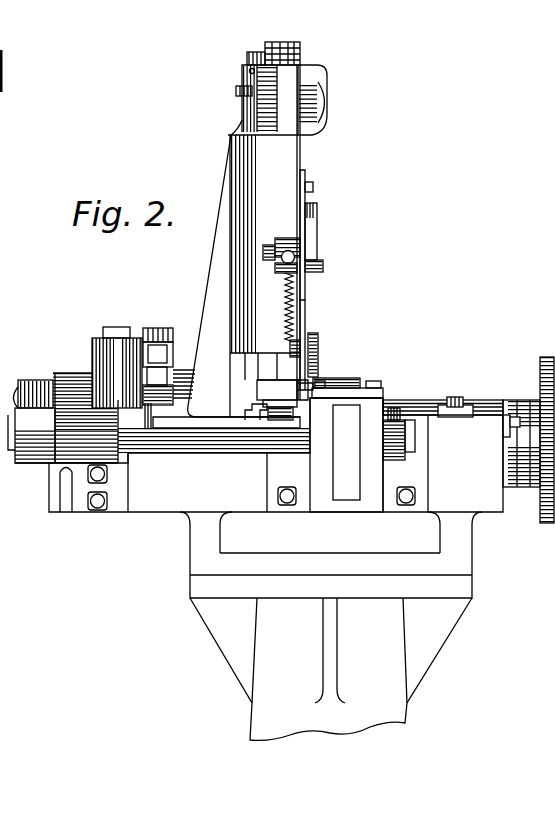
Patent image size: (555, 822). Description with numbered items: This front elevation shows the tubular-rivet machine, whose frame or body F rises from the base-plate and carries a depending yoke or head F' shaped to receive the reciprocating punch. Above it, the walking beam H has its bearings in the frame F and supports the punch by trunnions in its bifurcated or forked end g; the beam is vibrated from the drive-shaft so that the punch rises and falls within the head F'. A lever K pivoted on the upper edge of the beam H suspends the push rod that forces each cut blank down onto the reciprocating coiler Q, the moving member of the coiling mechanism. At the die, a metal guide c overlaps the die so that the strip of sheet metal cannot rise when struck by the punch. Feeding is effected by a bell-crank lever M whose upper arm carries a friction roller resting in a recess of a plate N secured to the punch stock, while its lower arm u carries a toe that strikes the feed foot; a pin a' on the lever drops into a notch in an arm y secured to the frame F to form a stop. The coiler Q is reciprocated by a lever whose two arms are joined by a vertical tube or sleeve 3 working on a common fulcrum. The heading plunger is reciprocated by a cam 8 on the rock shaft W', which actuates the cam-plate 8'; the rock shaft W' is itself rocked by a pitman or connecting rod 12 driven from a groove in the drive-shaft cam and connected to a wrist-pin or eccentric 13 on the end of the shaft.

The lever K is at (289, 55).
The bifurcated or forked end g is at (238, 88).
The arm y is at (328, 90).
The depending yoke or head F' is at (244, 241).
The plate N is at (305, 203).
The bell-crank lever M is at (320, 237).
The reciprocating coiler Q is at (283, 241).
The beam H is at (284, 297).
The lower arm u is at (312, 342).
The pin or projection a' is at (281, 341).
The frame or body F is at (222, 404).
The cam 8 is at (346, 455).
The cam-plate 8' is at (355, 452).
The rock shaft W' is at (276, 455).
The pitman or connecting rod 12 is at (36, 378).
The wrist-pin or eccentric 13 is at (63, 418).
The vertical tube or sleeve 3 is at (170, 342).
The metal guide c is at (3, 72).